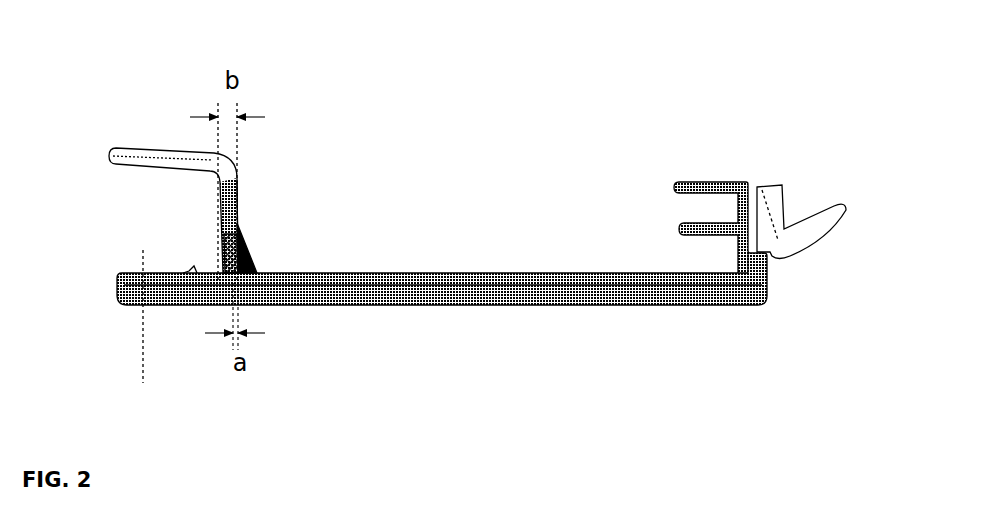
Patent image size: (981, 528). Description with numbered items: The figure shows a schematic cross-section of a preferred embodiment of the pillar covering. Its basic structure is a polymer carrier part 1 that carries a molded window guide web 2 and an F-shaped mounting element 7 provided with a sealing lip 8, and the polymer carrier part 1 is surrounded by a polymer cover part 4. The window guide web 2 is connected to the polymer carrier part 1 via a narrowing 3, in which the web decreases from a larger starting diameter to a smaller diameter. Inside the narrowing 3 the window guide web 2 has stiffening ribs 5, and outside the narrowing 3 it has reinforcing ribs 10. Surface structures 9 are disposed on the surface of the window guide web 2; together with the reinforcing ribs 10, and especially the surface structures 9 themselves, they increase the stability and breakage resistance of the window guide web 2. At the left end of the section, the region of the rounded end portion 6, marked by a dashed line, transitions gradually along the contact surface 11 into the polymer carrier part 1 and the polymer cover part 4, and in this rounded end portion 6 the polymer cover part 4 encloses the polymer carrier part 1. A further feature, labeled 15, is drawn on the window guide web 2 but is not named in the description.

The polymer carrier part 1 is at (426, 264).
The window guide web 2 is at (240, 135).
The narrowing 3 is at (234, 236).
The polymer cover part 4 is at (424, 313).
The stiffening ribs 5 is at (222, 262).
The rounded end portion 6 is at (128, 314).
The F-shaped mounting element 7 is at (705, 157).
The sealing lip 8 is at (820, 220).
The surface structures 9 is at (167, 145).
The reinforcing ribs 10 is at (257, 237).
The contact surface 11 is at (130, 271).
The surface layer of arm 15 is at (123, 155).